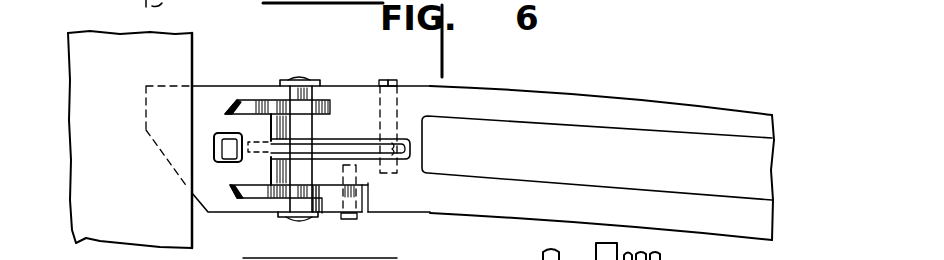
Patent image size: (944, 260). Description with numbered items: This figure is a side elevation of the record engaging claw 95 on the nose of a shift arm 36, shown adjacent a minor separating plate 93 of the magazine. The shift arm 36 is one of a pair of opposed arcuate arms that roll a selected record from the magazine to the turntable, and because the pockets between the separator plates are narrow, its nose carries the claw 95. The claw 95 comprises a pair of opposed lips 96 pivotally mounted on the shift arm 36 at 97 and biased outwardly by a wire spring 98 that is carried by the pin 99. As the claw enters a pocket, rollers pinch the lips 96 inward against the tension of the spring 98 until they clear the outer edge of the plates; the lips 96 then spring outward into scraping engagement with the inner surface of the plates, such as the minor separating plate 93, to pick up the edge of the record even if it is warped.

The shift arm 36 is at (578, 105).
The minor separating plate 93 is at (185, 55).
The record engaging claw 95 is at (253, 82).
The lip 96 is at (212, 87).
The pivot 97 is at (303, 78).
The wire spring 98 is at (337, 148).
The pin 99 is at (391, 79).